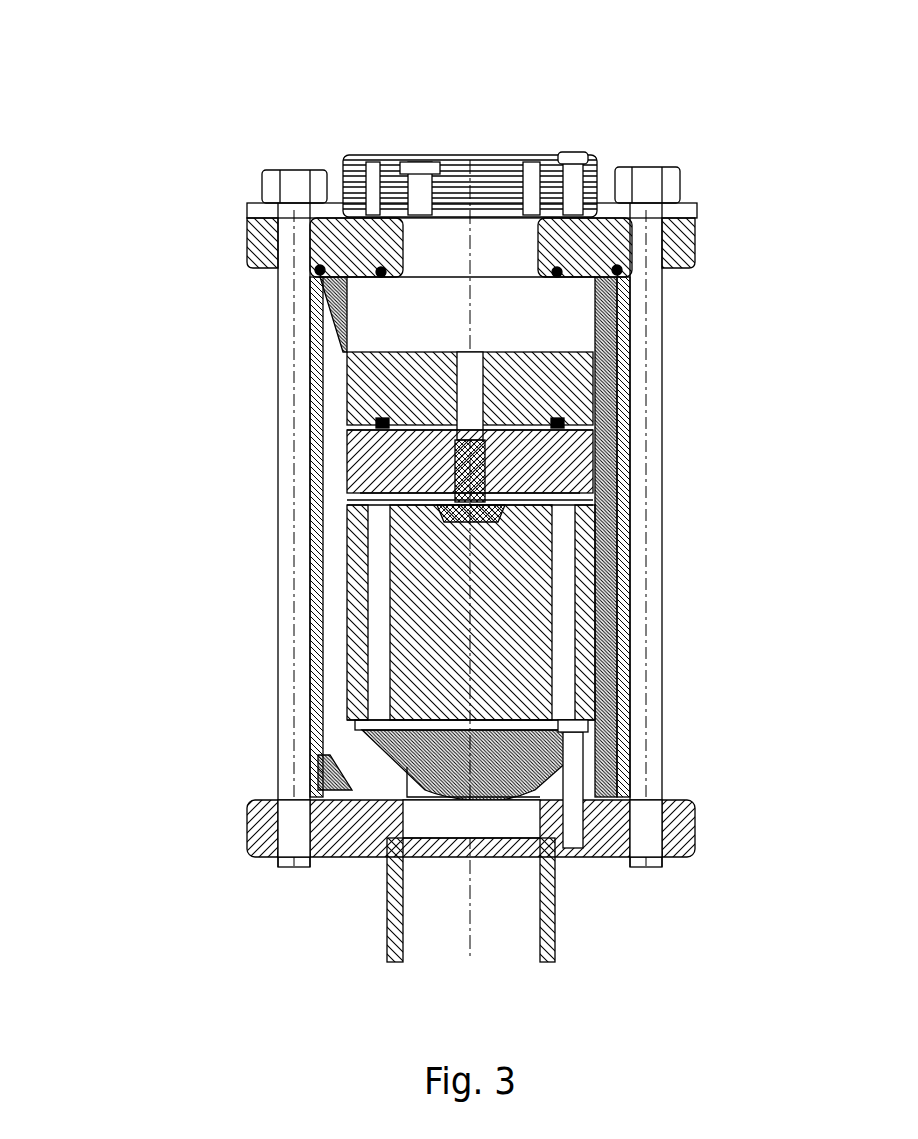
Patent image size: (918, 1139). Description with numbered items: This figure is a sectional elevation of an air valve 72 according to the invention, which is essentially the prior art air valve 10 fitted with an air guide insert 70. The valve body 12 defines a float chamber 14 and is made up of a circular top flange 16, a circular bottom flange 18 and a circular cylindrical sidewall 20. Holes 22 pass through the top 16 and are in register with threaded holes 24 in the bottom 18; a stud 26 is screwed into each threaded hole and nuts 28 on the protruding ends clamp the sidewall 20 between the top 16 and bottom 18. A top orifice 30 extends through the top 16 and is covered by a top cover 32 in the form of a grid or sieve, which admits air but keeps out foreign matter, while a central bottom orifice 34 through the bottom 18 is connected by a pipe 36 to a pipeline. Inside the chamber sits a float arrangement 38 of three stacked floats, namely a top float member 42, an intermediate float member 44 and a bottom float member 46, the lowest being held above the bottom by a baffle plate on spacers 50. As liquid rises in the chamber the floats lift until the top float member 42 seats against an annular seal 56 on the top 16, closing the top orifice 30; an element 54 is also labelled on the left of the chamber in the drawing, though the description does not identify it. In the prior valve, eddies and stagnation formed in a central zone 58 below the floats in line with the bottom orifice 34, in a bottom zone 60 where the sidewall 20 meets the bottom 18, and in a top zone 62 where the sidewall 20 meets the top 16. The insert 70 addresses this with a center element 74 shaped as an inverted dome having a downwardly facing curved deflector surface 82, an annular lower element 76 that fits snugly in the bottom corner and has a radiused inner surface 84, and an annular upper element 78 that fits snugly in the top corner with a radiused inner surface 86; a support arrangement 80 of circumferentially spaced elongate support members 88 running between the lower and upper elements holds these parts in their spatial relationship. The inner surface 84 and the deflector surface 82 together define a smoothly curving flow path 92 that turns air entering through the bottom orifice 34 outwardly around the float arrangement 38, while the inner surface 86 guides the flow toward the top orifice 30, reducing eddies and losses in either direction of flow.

The air valve 10 is at (110, 72).
The valve body 12 is at (712, 438).
The float chamber 14 is at (343, 345).
The top flange 16 is at (698, 228).
The bottom flange 18 is at (698, 830).
The sidewall 20 is at (622, 625).
The holes 22 is at (270, 237).
The threaded holes 24 is at (268, 868).
The stud 26 is at (278, 515).
The nuts 28 is at (274, 184).
The top orifice 30 is at (483, 248).
The top cover 32 is at (425, 165).
The bottom orifice 34 is at (425, 815).
The pipe 36 is at (548, 928).
The float arrangement 38 is at (615, 487).
The top float member 42 is at (575, 355).
The intermediate float member 44 is at (345, 485).
The bottom float member 46 is at (583, 662).
The spacers 50 is at (580, 772).
The cylinder wall 54 is at (322, 385).
The annular seal 56 is at (553, 278).
The central zone 58 is at (492, 843).
The bottom zone 60 is at (290, 780).
The top zone 62 is at (283, 287).
The air guide insert 70 is at (632, 312).
The air valve 72 is at (222, 213).
The center element 74 is at (505, 752).
The lower element 76 is at (325, 788).
The upper element 78 is at (336, 328).
The support arrangement 80 is at (632, 428).
The deflector surface 82 is at (518, 785).
The inner surface 84 is at (343, 750).
The inner surface 86 is at (345, 302).
The support members 88 is at (612, 580).
The flow path 92 is at (395, 776).